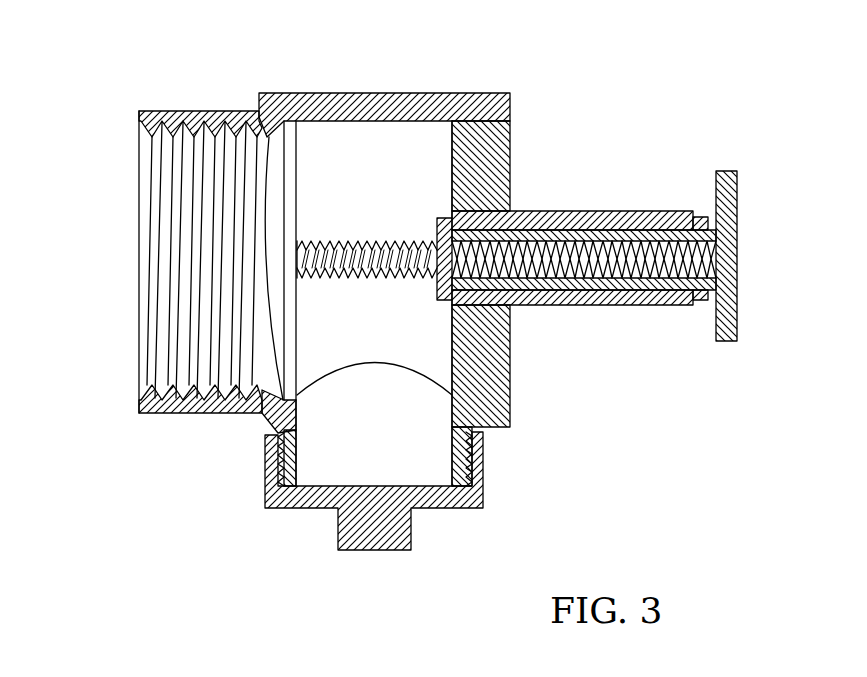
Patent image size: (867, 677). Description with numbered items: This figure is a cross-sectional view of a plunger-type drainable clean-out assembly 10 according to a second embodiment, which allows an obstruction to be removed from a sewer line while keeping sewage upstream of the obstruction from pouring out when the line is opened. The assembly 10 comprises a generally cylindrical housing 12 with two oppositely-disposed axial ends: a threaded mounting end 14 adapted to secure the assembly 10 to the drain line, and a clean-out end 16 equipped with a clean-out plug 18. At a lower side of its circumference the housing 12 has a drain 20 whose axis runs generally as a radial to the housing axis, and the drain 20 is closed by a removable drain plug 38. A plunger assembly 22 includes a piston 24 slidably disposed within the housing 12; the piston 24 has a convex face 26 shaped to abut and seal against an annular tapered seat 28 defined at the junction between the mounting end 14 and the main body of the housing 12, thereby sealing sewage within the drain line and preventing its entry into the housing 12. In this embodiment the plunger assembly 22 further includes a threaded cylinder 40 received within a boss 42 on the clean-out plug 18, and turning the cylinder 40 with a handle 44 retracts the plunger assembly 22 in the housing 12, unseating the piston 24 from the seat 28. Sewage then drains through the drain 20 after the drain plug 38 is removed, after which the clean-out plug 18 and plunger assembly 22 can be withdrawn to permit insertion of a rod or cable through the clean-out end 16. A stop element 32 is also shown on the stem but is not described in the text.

The clean-out assembly 10 is at (600, 128).
The housing 12 is at (335, 93).
The mounting end 14 is at (153, 415).
The clean-out end 16 is at (503, 427).
The clean-out plug 18 is at (512, 157).
The drain 20 is at (275, 425).
The plunger assembly 22 is at (381, 225).
The piston 24 is at (268, 180).
The convex face 26 is at (265, 305).
The tapered seat 28 is at (297, 396).
The stop stud 32 is at (383, 279).
The drain plug 38 is at (485, 488).
The threaded cylinder 40 is at (597, 211).
The boss 42 is at (550, 300).
The handle 44 is at (718, 341).